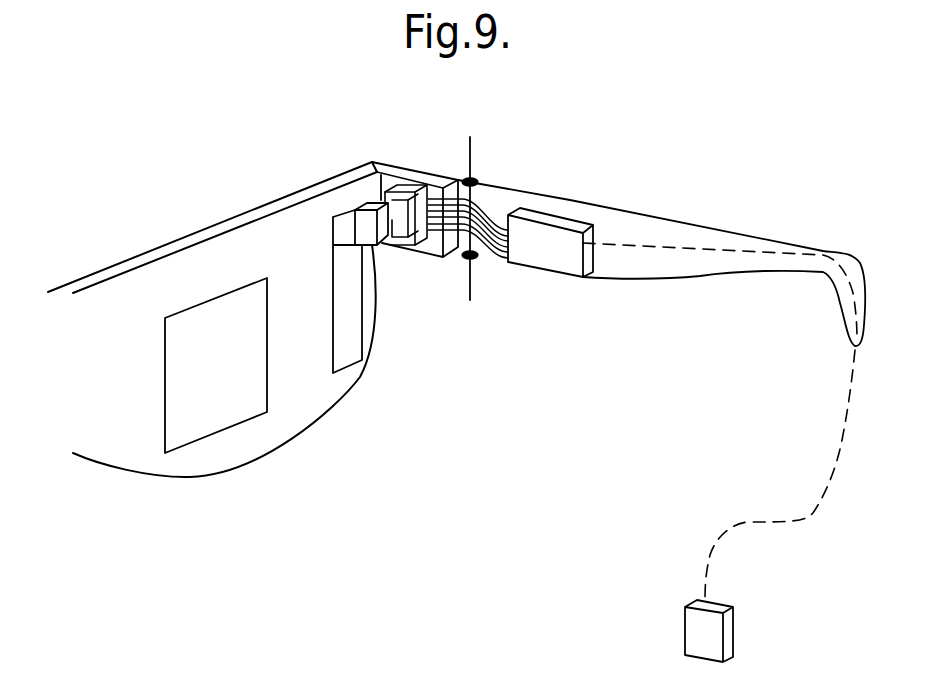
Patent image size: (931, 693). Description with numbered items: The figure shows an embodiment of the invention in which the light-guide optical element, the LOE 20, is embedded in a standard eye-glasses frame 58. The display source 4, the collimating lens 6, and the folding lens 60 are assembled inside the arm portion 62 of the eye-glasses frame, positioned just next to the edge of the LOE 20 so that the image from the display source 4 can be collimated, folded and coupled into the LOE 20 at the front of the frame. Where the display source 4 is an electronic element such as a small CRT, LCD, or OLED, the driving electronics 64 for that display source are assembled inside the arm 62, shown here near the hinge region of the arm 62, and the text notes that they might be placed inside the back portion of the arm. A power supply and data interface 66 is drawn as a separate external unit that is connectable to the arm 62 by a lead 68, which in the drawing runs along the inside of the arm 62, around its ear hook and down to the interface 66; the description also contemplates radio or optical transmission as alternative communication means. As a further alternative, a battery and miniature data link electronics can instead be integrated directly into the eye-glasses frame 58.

The eye-glasses frame 58 is at (180, 239).
The LOE 20 is at (280, 410).
The display source 4 is at (407, 194).
The folding lens 60 is at (373, 200).
The collimating lens 6 is at (360, 207).
The arm portion of the eye-glasses frame 62 is at (637, 212).
The driving electronics 64 is at (549, 213).
The lead 68 is at (843, 440).
The power supply and data interface 66 is at (685, 627).